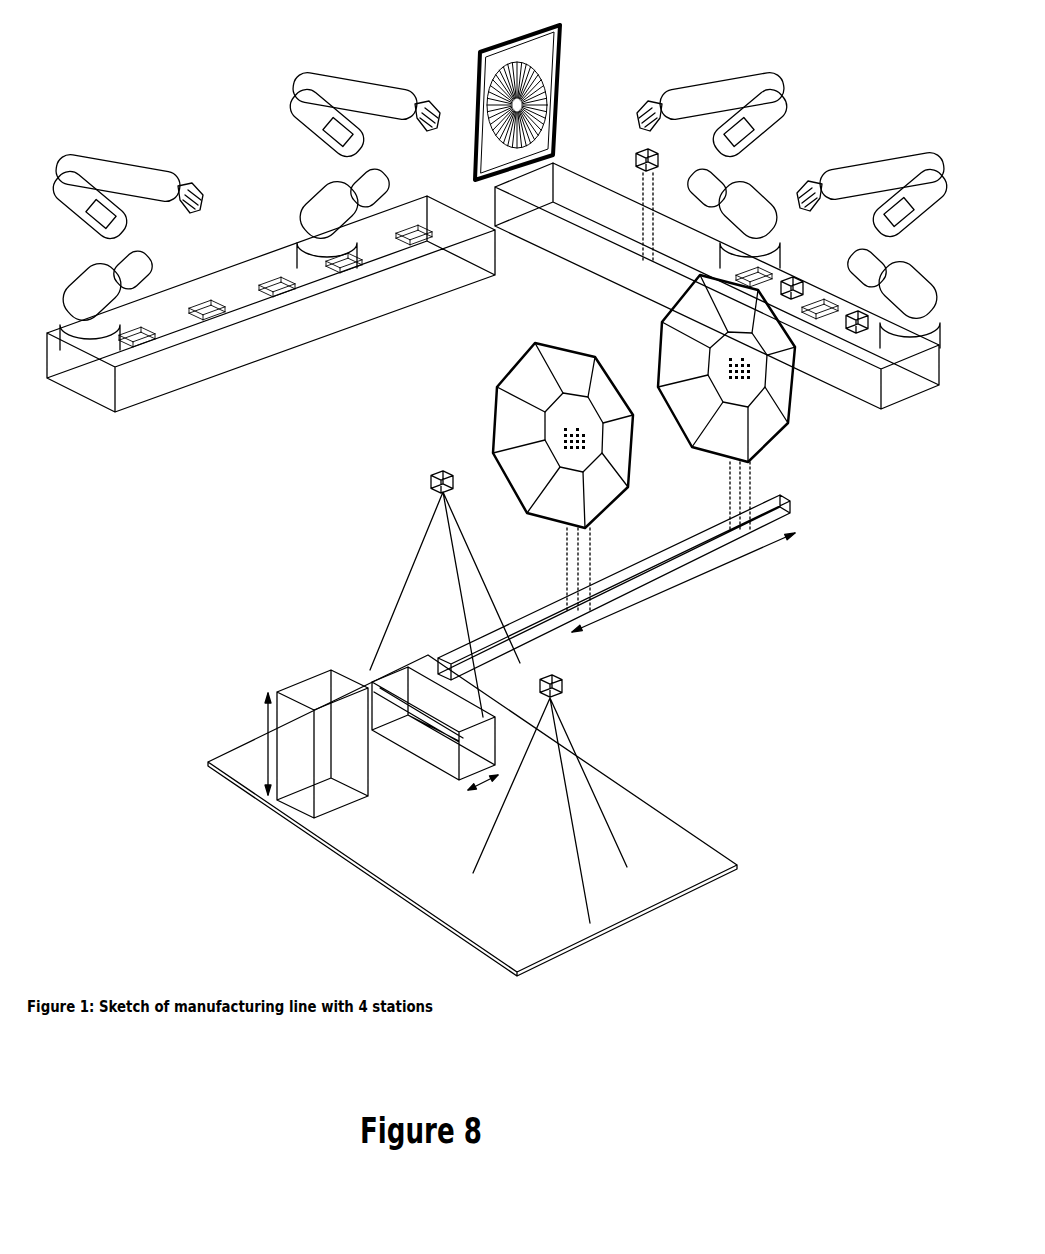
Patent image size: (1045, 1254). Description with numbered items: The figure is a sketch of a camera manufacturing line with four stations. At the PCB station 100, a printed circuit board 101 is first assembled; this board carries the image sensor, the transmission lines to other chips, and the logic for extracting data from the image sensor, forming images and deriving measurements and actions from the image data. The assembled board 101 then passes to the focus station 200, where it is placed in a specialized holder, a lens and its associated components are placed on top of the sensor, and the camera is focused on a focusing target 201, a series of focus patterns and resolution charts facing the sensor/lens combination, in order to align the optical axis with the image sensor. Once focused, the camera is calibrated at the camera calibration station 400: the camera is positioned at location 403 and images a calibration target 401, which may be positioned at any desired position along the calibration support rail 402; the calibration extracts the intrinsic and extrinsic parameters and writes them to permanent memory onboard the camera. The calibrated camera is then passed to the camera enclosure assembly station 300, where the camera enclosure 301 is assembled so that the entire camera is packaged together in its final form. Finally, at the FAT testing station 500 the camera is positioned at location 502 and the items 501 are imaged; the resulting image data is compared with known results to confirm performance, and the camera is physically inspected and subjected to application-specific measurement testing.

The PCB station 100 is at (271, 241).
The printed circuit board 101 is at (217, 313).
The focus station 200 is at (717, 239).
The focusing target 201 is at (476, 102).
The camera enclosure assembly station 300 is at (844, 334).
The camera enclosure 301 is at (807, 275).
The camera calibration station 400 is at (717, 642).
The calibration target 401 is at (598, 443).
The calibration support rail 402 is at (616, 587).
The camera location 403 is at (445, 594).
The FAT testing station 500 is at (472, 816).
The imaged items 501 is at (338, 753).
The camera location 502 is at (550, 799).